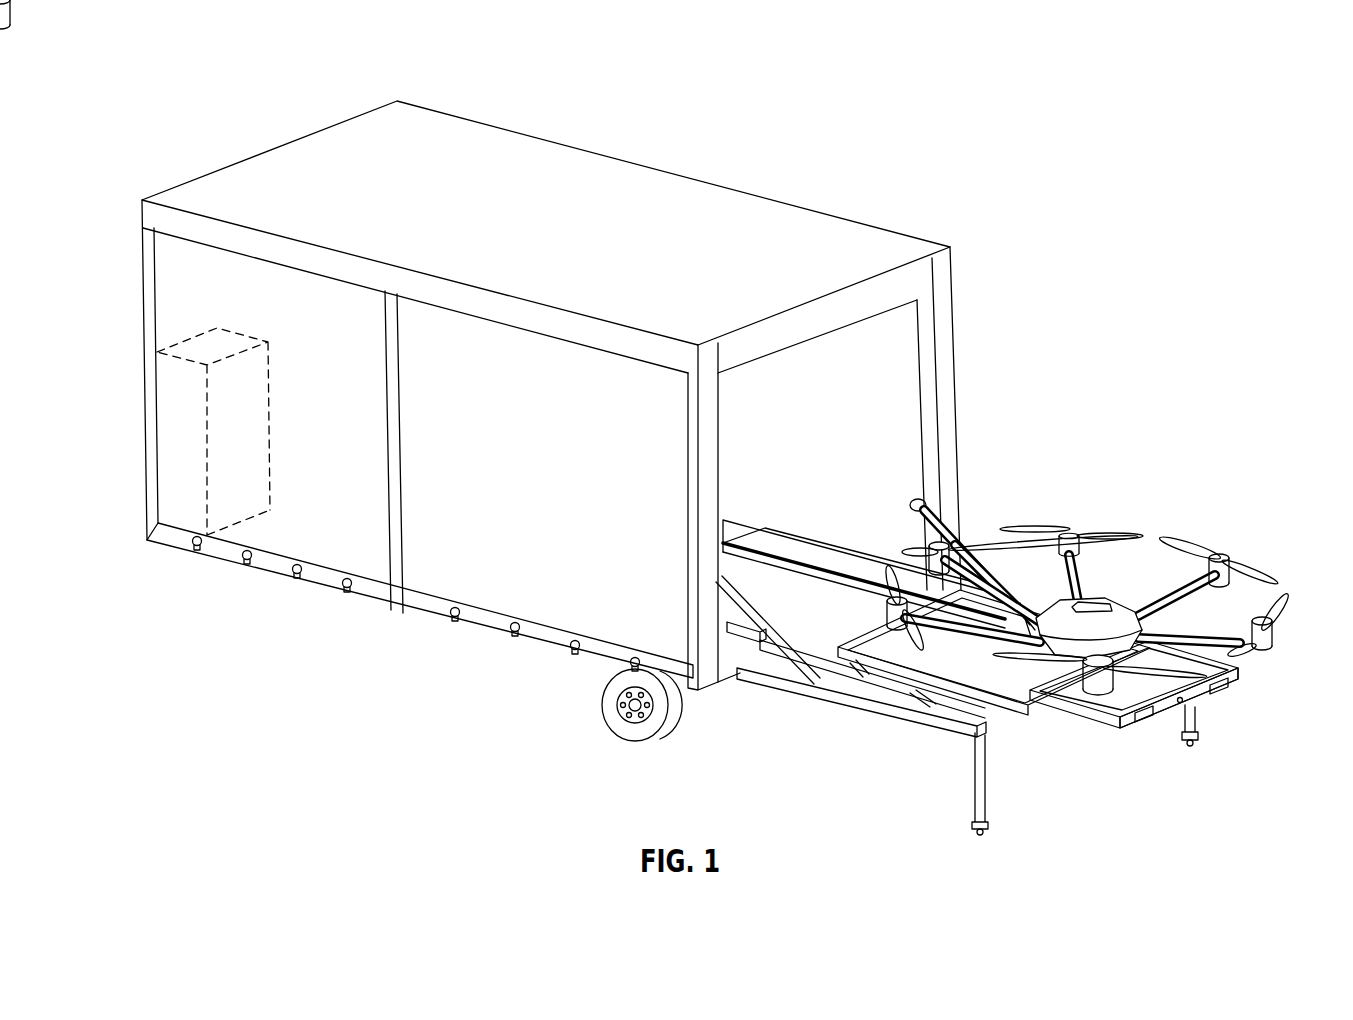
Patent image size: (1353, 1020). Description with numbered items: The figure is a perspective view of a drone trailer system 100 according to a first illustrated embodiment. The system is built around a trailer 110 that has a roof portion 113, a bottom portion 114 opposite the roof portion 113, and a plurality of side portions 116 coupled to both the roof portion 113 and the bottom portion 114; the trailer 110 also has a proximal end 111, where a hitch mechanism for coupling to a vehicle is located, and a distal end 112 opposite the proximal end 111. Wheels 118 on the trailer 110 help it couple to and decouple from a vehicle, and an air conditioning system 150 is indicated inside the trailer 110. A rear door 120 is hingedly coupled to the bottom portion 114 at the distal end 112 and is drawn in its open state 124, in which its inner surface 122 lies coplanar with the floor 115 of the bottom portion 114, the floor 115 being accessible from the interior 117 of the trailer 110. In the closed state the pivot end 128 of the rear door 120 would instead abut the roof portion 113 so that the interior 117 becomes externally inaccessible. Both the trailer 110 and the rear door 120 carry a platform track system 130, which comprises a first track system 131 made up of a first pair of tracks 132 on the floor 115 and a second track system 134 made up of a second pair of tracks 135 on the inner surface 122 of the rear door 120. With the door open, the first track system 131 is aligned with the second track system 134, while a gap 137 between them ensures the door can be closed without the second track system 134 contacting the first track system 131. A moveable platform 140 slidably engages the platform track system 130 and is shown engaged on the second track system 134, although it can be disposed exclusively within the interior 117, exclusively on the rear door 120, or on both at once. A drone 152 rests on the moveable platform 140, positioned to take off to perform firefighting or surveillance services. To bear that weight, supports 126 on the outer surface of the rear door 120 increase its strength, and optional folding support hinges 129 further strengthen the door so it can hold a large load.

The drone trailer system 100 is at (1147, 166).
The trailer 110 is at (537, 136).
The proximal end 111 is at (268, 150).
The distal end 112 is at (800, 305).
The roof portion 113 is at (703, 222).
The bottom portion 114 is at (482, 625).
The floor 115 is at (730, 527).
The plurality of side portions 116 is at (943, 310).
The interior 117 is at (808, 411).
The wheel 118 is at (610, 725).
The rear door 120 is at (817, 697).
The inner surface 122 is at (980, 710).
The open state 124 is at (646, 347).
The support 126 is at (1193, 742).
The pivot end 128 is at (1033, 715).
The folding support hinge 129 is at (943, 530).
The platform track system 130 is at (1008, 468).
The first track system 131 is at (798, 560).
The first pair of tracks 132 is at (850, 573).
The second track system 134 is at (920, 695).
The second pair of tracks 135 is at (877, 675).
The gap 137 is at (773, 645).
The moveable platform 140 is at (1238, 675).
The air conditioning system 150 is at (162, 387).
The drone 152 is at (1197, 536).